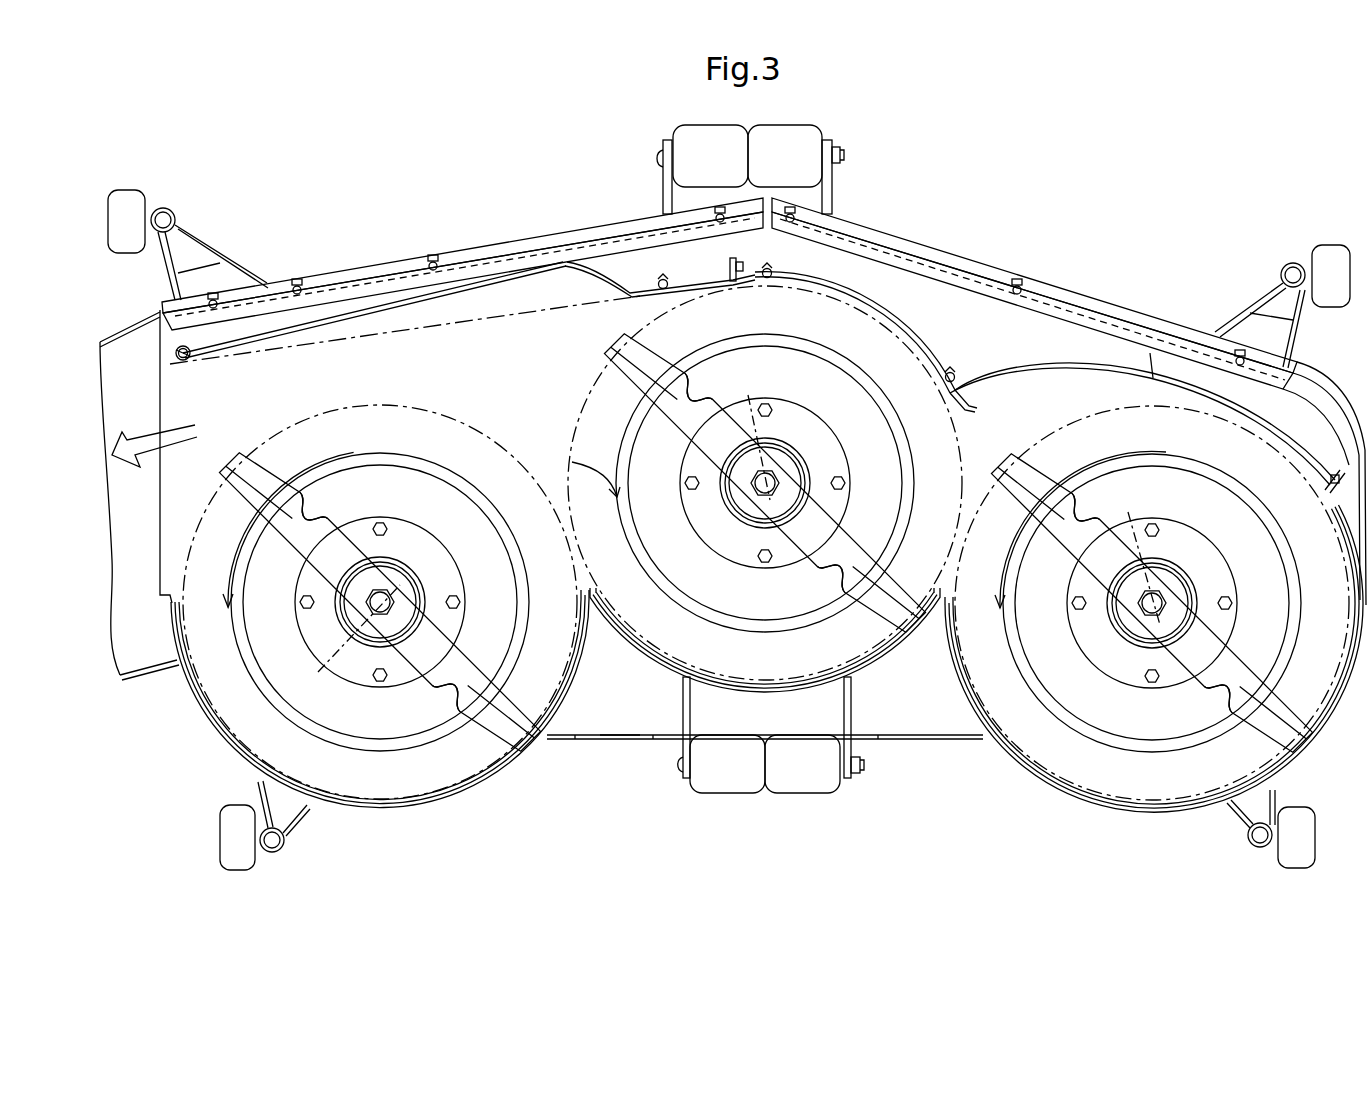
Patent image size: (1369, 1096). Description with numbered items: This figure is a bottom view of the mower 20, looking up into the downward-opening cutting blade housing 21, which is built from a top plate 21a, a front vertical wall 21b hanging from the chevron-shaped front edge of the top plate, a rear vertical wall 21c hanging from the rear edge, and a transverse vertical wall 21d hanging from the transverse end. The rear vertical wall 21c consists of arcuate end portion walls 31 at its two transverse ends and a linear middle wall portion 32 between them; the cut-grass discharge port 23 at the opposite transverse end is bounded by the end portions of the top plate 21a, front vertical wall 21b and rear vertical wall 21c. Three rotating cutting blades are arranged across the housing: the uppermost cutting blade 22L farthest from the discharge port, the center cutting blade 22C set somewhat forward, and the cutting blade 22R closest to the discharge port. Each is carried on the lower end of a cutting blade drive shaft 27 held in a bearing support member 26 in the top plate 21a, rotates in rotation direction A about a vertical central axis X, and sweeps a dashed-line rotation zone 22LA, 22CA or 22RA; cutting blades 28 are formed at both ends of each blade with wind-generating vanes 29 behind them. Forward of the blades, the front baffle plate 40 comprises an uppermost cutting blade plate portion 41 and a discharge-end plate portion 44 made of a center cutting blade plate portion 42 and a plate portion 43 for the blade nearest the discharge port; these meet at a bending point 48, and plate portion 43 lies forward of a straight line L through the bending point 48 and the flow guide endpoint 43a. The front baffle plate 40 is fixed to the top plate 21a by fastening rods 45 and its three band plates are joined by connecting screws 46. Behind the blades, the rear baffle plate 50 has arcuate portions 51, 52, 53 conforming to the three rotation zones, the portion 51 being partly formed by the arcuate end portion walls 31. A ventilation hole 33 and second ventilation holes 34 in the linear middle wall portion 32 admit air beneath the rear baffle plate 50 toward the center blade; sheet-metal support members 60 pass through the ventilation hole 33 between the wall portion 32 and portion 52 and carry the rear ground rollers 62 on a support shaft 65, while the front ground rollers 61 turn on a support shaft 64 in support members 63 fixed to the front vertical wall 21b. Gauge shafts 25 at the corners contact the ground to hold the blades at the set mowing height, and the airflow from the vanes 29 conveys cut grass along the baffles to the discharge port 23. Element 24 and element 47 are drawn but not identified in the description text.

The mower 20 is at (285, 205).
The cutting blade housing 21 is at (925, 235).
The top plate 21a is at (500, 292).
The front vertical wall 21b is at (580, 240).
The rear vertical wall 21c is at (810, 809).
The transverse vertical wall 21d is at (1360, 555).
The cutting blade closest to the discharge port 22R is at (353, 530).
The center cutting blade 22C is at (840, 500).
The uppermost cutting blade 22L is at (1225, 635).
The rotation zone of the cutting blade closest to the discharge port 22RA is at (380, 602).
The rotation zone of the center cutting blade 22CA is at (765, 483).
The rotation zone of the uppermost cutting blade 22LA is at (1152, 603).
The cut-grass discharge port 23 is at (160, 570).
The discharge chute 24 is at (123, 338).
The gauge shaft 25 is at (128, 190).
The support member 26 is at (405, 555).
The cutting blade drive shaft 27 is at (420, 578).
The cutting blade 28 is at (300, 517).
The wind-generating vane 29 is at (277, 470).
The arcuate end portion wall 31 is at (385, 805).
The linear middle wall portion 32 is at (550, 740).
The ventilation hole 33 is at (825, 758).
The second ventilation hole 34 is at (633, 745).
The front baffle plate 40 is at (1050, 372).
The uppermost cutting blade plate portion 41 is at (1152, 365).
The center cutting blade plate portion 42 is at (950, 277).
The plate portion for the cutting blade closest to the discharge port 43 is at (345, 300).
The flow guide endpoint 43a is at (190, 360).
The discharge-end plate portion 44 is at (740, 293).
The fastening rod 45 is at (772, 276).
The connecting screw 46 is at (730, 268).
The joint portion 47 is at (960, 395).
The bending point 48 is at (632, 297).
The rear baffle plate 50 is at (767, 658).
The portion corresponding to the uppermost cutting blade 51 is at (1143, 800).
The portion corresponding to the center cutting blade 52 is at (755, 680).
The portion corresponding to the cutting blade closest to the discharge port 53 is at (375, 800).
The support member 60 is at (690, 710).
The front ground roller 61 is at (775, 130).
The rear ground roller 62 is at (812, 795).
The support member 63 is at (660, 180).
The support shaft 64 is at (845, 152).
The support shaft 65 is at (862, 768).
The rotation direction A is at (354, 452).
The central axis X is at (726, 535).
The straight line L is at (535, 314).